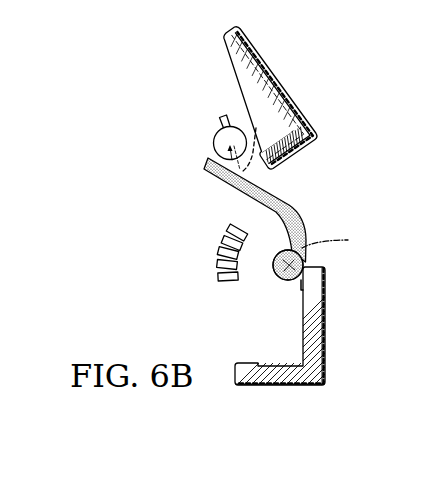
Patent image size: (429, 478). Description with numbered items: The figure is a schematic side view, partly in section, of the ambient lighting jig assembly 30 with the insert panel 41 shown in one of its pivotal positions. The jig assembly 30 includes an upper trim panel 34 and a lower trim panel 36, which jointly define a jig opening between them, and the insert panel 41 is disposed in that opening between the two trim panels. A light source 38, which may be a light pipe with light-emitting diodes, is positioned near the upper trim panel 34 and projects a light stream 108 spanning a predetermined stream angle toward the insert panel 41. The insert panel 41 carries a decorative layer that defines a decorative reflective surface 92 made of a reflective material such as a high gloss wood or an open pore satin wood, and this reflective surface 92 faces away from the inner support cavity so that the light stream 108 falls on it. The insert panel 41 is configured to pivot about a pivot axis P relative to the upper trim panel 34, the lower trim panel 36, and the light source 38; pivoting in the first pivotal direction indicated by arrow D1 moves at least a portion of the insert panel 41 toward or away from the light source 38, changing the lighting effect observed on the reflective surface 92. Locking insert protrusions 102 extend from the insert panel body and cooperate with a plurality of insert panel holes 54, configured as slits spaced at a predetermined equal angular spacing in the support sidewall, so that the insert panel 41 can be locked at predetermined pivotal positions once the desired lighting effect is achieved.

The jig assembly 30 is at (222, 63).
The upper trim panel 34 is at (281, 82).
The light source 38 is at (213, 145).
The light stream 108 is at (257, 140).
The decorative reflective surface 92 is at (290, 200).
The insert panel 41 is at (281, 200).
The pivot axis P is at (331, 239).
The locking insert protrusions 102 is at (228, 227).
The insert panel holes 54 is at (215, 281).
The first pivotal direction D1 is at (220, 188).
The lower trim panel 36 is at (326, 323).